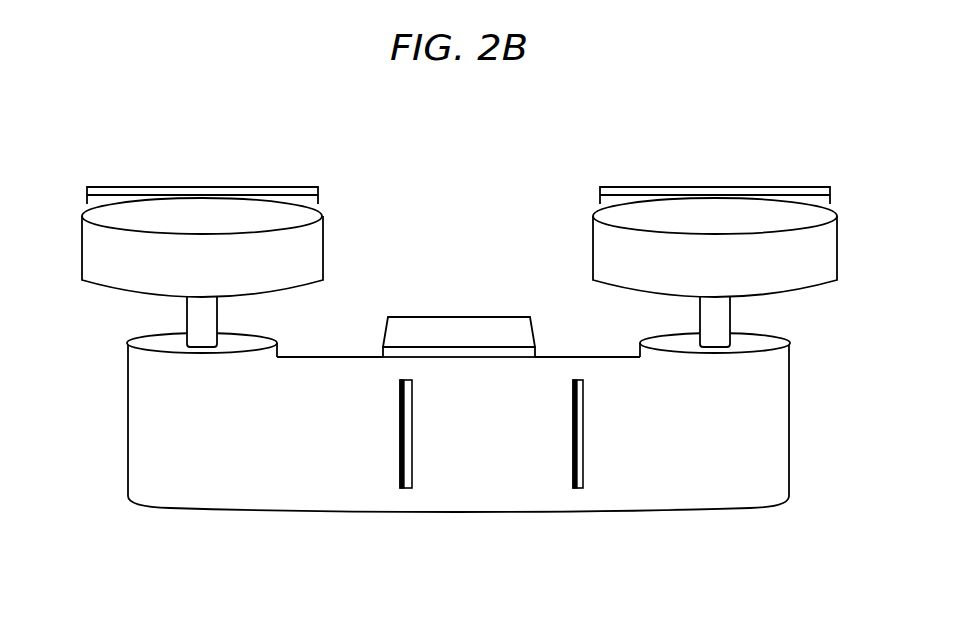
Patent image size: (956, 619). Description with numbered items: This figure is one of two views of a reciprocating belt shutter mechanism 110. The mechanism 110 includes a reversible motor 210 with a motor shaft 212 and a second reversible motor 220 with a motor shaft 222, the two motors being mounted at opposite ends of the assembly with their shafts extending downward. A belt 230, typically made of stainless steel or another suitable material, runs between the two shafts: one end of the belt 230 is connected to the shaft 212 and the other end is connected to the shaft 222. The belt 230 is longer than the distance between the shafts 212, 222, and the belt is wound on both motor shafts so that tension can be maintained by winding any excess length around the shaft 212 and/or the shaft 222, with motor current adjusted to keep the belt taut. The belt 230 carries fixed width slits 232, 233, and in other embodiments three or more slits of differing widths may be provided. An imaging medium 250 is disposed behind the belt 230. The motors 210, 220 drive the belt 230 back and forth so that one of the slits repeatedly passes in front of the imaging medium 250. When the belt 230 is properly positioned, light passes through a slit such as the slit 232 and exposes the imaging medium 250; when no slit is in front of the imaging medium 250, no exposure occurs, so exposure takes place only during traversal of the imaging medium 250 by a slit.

The reciprocating belt shutter mechanism 110 is at (782, 110).
The reversible motor 210 is at (593, 213).
The motor shaft 212 is at (790, 347).
The reversible motor 220 is at (322, 213).
The motor shaft 222 is at (128, 346).
The belt 230 is at (457, 512).
The fixed width slit 232 is at (400, 433).
The fixed width slit 233 is at (573, 433).
The imaging medium 250 is at (456, 316).